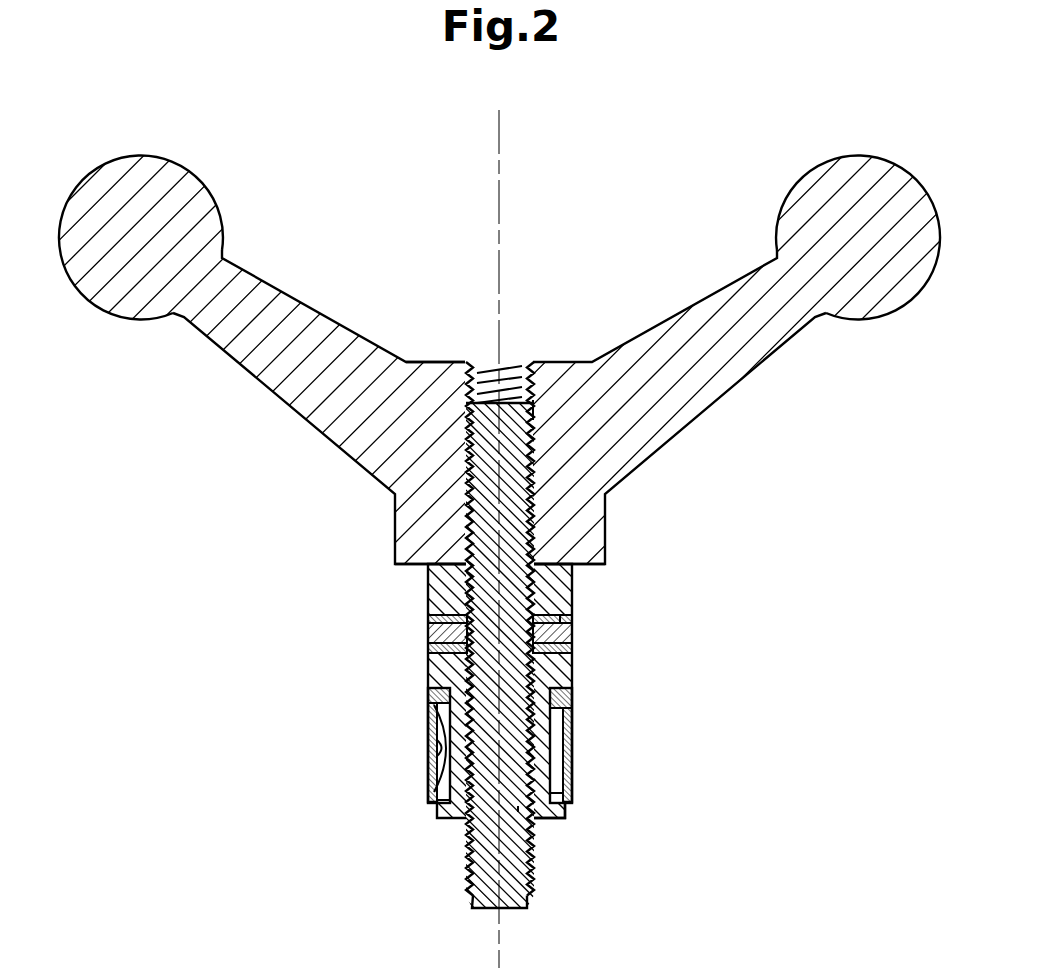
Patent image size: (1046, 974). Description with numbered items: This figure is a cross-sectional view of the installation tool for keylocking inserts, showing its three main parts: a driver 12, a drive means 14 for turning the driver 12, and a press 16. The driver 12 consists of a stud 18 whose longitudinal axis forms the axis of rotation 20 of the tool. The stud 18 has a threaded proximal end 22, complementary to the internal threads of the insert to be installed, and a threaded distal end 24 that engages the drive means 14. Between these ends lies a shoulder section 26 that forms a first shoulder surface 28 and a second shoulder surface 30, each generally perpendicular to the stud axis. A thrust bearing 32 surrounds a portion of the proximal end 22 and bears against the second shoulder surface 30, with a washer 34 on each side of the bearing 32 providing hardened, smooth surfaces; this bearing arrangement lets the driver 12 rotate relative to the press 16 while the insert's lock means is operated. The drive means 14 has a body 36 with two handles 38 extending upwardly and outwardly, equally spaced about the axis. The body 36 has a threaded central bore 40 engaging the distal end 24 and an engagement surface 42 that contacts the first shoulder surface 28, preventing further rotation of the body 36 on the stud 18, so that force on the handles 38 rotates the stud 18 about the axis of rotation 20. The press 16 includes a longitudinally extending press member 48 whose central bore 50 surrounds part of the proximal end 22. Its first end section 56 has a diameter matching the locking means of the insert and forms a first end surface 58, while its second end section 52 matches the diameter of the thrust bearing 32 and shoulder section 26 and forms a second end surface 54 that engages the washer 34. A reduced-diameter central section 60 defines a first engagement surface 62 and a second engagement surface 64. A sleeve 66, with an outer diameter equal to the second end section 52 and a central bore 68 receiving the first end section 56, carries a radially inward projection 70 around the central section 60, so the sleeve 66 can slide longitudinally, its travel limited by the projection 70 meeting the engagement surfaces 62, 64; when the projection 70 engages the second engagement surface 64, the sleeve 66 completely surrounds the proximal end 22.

The driver 12 is at (519, 570).
The drive means 14 is at (523, 364).
The press 16 is at (497, 714).
The stud 18 is at (493, 403).
The axis of rotation 20 is at (498, 132).
The threaded proximal end 22 is at (530, 897).
The threaded distal end 24 is at (532, 420).
The shoulder section 26 is at (574, 597).
The first shoulder surface 28 is at (545, 560).
The second shoulder surface 30 is at (568, 622).
The thrust bearing 32 is at (430, 637).
The washer 34 is at (430, 618).
The body 36 is at (422, 360).
The handles 38 is at (259, 278).
The threaded central bore 40 is at (478, 364).
The engagement surface 42 is at (410, 565).
The press member 48 is at (556, 750).
The central bore 50 is at (518, 806).
The second end section 52 is at (574, 683).
The second end surface 54 is at (575, 632).
The first end section 56 is at (566, 815).
The first end surface 58 is at (550, 818).
The central section 60 is at (563, 790).
The first engagement surface 62 is at (430, 697).
The second engagement surface 64 is at (435, 790).
The sleeve 66 is at (574, 720).
The central bore 68 is at (443, 748).
The projection 70 is at (440, 722).